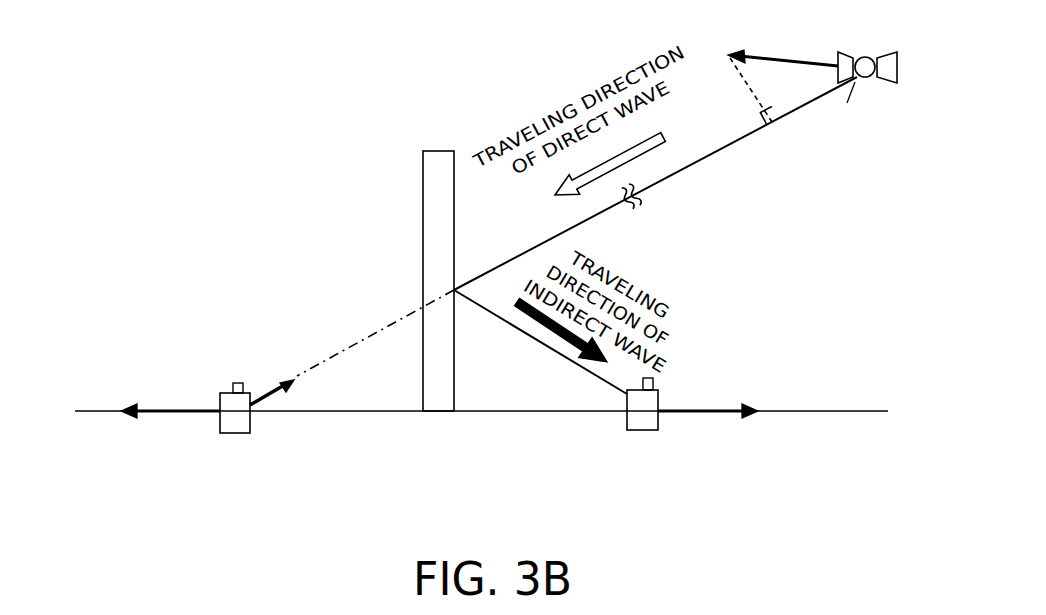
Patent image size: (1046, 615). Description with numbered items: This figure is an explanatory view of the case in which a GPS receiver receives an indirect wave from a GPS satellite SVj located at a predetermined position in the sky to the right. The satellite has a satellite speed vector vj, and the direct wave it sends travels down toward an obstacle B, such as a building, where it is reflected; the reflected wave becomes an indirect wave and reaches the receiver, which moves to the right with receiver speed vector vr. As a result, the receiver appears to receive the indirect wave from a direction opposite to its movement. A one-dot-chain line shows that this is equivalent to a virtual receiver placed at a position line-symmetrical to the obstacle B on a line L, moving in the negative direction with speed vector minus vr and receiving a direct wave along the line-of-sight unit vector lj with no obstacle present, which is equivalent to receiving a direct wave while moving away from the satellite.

The obstacle B is at (441, 150).
The line L is at (510, 411).
The GPS satellite SVj is at (867, 65).
The satellite speed vector vj is at (779, 32).
The line-of-sight unit vector lj is at (266, 352).
The receiver speed vector vr is at (759, 426).